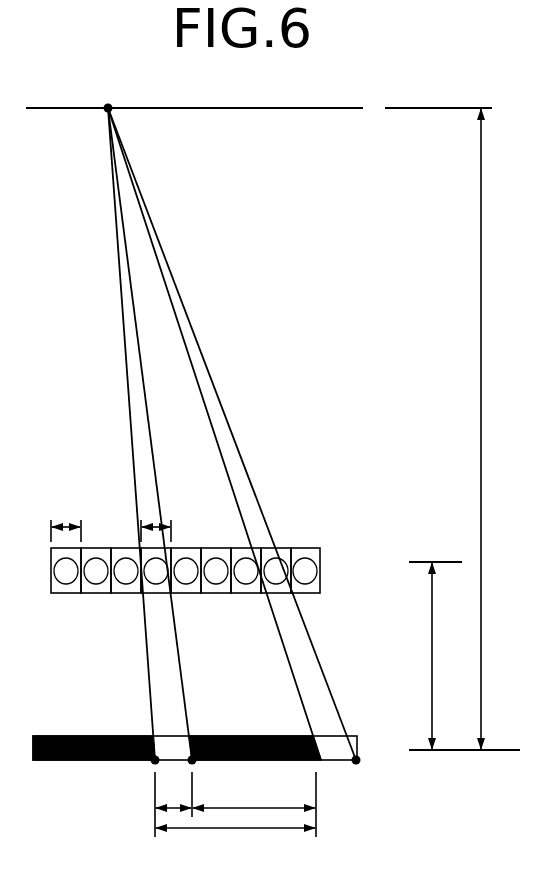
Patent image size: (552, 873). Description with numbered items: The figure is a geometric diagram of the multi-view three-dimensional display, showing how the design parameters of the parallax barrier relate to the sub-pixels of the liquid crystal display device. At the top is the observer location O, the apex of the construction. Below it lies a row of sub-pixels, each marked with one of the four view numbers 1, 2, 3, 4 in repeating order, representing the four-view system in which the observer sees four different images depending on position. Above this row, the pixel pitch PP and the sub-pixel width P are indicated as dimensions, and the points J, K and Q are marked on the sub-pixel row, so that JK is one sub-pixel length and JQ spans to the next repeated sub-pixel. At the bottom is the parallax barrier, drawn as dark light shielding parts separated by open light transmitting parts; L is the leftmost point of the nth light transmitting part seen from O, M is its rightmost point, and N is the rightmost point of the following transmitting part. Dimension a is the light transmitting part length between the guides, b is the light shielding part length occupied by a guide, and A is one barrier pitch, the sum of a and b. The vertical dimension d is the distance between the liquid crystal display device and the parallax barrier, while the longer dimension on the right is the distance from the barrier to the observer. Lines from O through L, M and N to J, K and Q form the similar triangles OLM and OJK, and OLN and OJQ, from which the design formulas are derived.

The observer location O is at (227, 416).
The first observer location image 1 is at (216, 570).
The second observer location image 2 is at (185, 570).
The third observer location image 3 is at (156, 570).
The fourth observer location image 4 is at (186, 570).
The pixel pitch PP is at (67, 517).
The pixel width P is at (156, 517).
The sub-pixel endpoint J is at (129, 610).
The sub-pixel endpoint K is at (193, 610).
The sub-pixel endpoint Q is at (304, 610).
The leftmost point of light transmitting part L is at (142, 775).
The rightmost point of light transmitting part M is at (206, 775).
The rightmost point of next light transmitting part N is at (354, 775).
The light transmitting part length a is at (173, 795).
The light shielding part length b is at (254, 795).
The pitch of parallax barrier A is at (235, 842).
The distance between liquid crystal display device and parallax barrier d is at (419, 656).